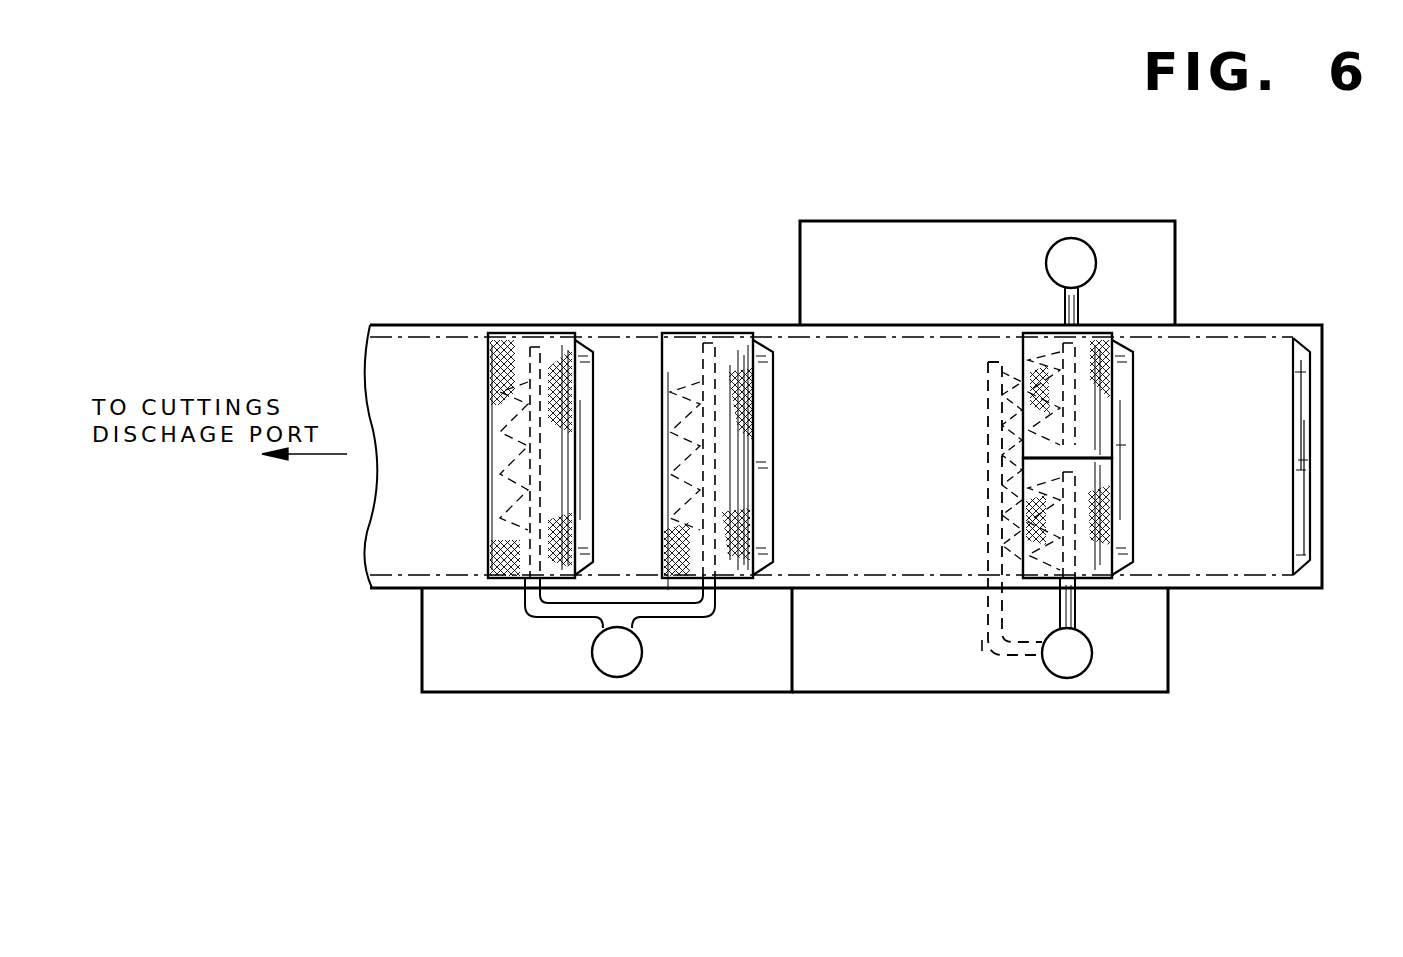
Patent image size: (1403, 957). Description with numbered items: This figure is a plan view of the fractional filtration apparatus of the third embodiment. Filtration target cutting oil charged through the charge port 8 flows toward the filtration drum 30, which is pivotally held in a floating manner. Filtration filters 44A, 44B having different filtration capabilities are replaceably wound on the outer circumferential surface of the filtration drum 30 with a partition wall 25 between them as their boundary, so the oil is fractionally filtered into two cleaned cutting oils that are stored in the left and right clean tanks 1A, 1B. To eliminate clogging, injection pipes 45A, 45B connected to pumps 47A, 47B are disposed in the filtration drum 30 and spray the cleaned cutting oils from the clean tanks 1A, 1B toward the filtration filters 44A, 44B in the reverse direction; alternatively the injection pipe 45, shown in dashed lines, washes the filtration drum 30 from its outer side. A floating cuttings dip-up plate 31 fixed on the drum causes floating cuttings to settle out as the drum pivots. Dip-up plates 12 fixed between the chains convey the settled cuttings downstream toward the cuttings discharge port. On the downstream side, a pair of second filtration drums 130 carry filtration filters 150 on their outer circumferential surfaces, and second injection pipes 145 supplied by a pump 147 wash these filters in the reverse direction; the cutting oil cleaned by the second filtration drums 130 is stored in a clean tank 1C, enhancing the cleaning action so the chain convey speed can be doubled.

The charge port 8 is at (1255, 418).
The dip-up plate 12 is at (1300, 496).
The left clean tank 1A is at (930, 675).
The right clean tank 1B is at (991, 240).
The clean tank 1C is at (769, 676).
The second injection pipe 145 is at (532, 378).
The second filtration drum 130 is at (670, 377).
The floating cuttings dip-up plate 31 is at (578, 444).
The filtration filter 150 is at (486, 522).
The pump 147 is at (615, 666).
The filtration filter 44A is at (1138, 506).
The filtration filter 44B is at (1138, 394).
The partition wall 25 is at (1116, 452).
The injection pipe 45 is at (980, 638).
The injection pipe 45A is at (1073, 612).
The injection pipe 45B is at (1080, 299).
The pump 47A is at (1068, 668).
The pump 47B is at (1069, 250).
The filtration drum 30 is at (976, 444).